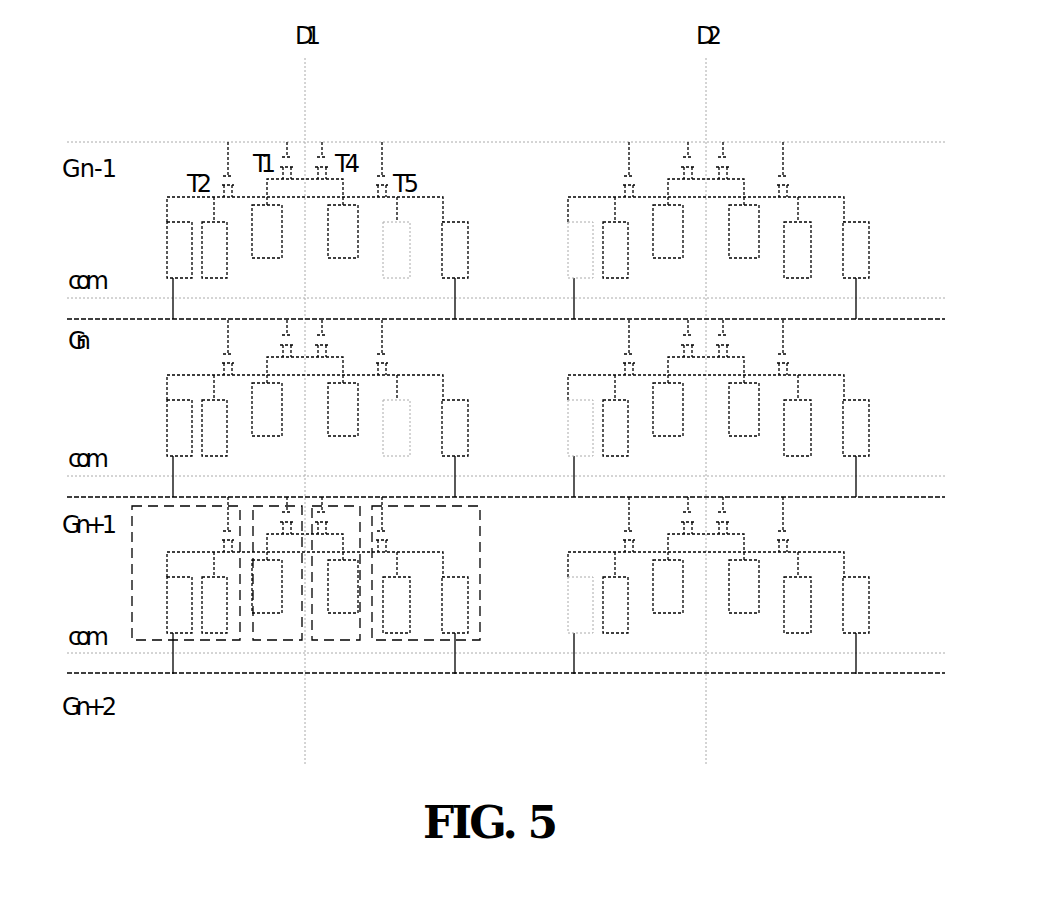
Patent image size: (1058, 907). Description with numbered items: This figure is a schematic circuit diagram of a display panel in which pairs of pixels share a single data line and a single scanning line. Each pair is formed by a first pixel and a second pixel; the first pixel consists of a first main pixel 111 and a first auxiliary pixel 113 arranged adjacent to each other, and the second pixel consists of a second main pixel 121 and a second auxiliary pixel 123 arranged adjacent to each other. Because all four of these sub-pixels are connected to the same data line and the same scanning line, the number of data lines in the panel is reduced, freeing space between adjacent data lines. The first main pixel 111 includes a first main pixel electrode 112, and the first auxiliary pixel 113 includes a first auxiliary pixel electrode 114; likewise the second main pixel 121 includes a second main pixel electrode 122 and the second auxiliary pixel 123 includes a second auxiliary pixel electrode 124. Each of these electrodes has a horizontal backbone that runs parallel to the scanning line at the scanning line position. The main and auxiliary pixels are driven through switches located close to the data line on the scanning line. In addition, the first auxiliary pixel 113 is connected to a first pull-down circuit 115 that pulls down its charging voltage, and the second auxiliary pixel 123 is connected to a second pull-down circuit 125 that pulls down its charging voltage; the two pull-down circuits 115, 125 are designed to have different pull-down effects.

The first main pixel 111 is at (265, 620).
The first main pixel electrode 112 is at (662, 585).
The first auxiliary pixel 113 is at (152, 623).
The first auxiliary pixel electrode 114 is at (615, 598).
The first pull-down circuit 115 is at (577, 620).
The second main pixel 121 is at (340, 618).
The second main pixel electrode 122 is at (738, 587).
The second auxiliary pixel 123 is at (436, 625).
The second auxiliary pixel electrode 124 is at (795, 605).
The second pull-down circuit 125 is at (860, 618).